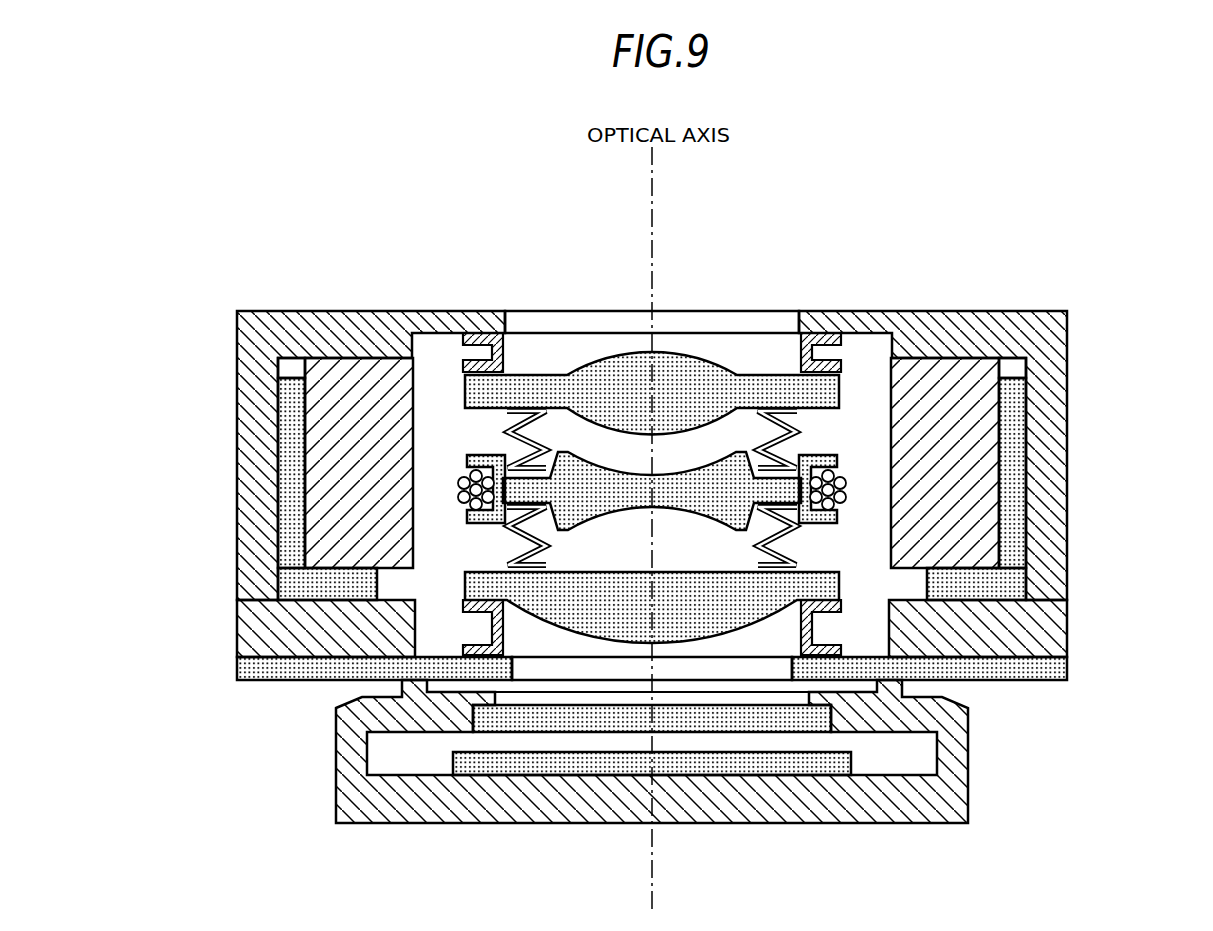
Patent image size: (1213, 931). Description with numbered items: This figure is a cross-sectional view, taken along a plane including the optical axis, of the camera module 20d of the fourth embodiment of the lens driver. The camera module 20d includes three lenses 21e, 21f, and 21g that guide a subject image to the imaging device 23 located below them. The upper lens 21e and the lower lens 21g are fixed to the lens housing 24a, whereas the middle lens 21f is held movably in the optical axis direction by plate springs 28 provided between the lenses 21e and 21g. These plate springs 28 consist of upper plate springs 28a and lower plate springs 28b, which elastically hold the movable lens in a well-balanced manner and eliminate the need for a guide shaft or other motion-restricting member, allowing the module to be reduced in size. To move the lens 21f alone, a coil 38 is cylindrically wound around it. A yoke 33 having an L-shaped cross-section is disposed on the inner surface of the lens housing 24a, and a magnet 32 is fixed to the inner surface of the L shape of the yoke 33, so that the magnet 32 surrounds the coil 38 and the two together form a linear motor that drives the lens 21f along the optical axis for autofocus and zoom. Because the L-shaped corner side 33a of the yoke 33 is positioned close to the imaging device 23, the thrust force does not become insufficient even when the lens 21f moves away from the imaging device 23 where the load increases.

The camera module 20d is at (937, 143).
The lens 21e is at (693, 397).
The lens 21f is at (587, 490).
The lens 21g is at (720, 600).
The imaging device 23 is at (490, 778).
The lens housing 24a is at (1067, 379).
The plate springs 28 is at (827, 404).
The upper plate springs 28a is at (845, 488).
The lower plate springs 28b is at (780, 548).
The magnet 32 is at (353, 407).
The yoke 33 is at (292, 452).
The L-shaped corner side 33a is at (297, 580).
The coil 38 is at (457, 487).